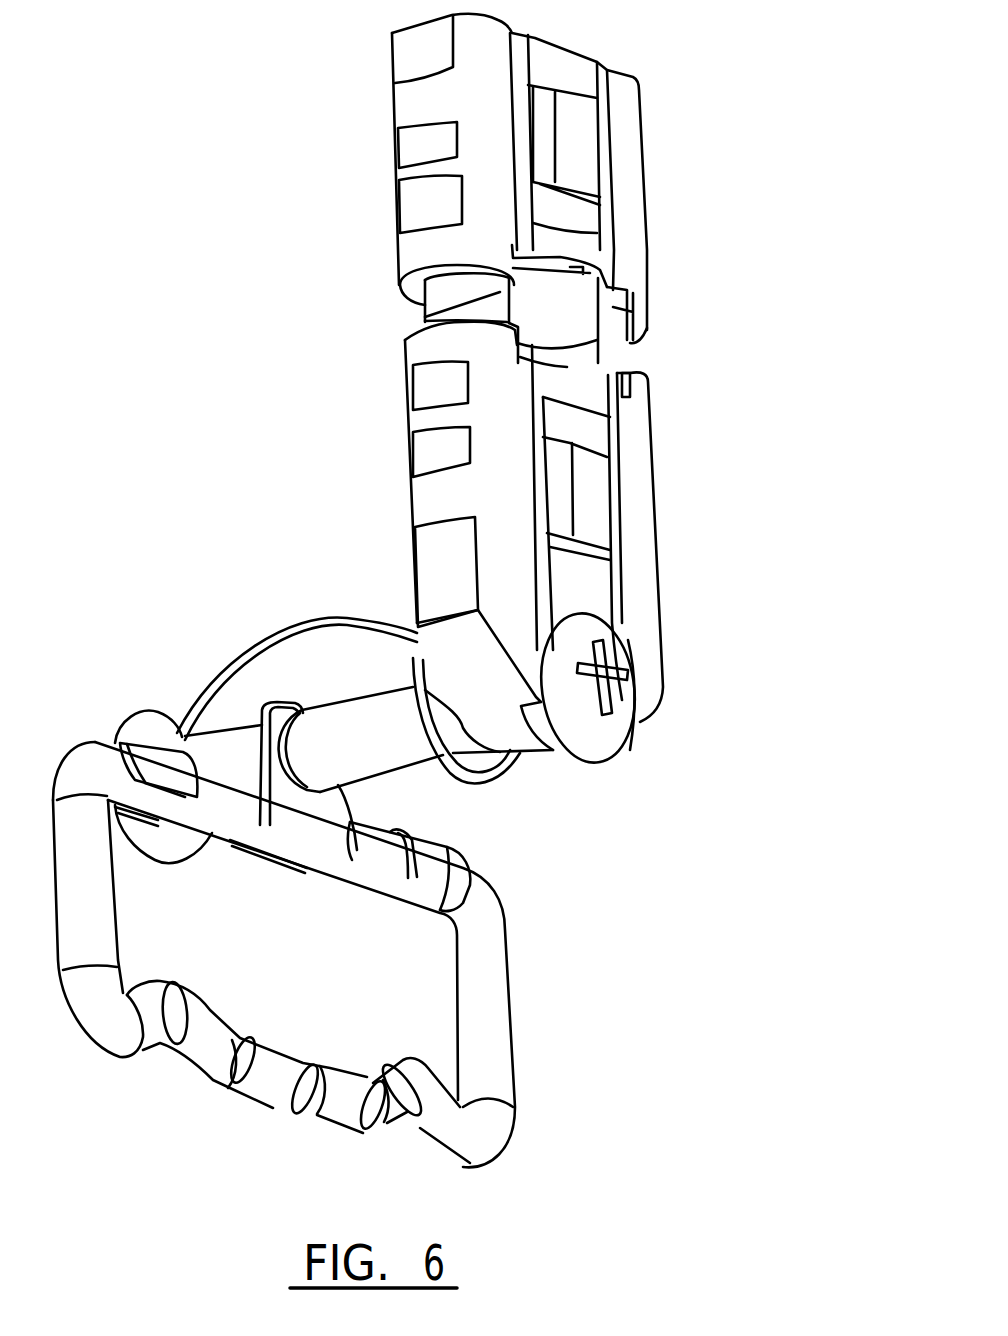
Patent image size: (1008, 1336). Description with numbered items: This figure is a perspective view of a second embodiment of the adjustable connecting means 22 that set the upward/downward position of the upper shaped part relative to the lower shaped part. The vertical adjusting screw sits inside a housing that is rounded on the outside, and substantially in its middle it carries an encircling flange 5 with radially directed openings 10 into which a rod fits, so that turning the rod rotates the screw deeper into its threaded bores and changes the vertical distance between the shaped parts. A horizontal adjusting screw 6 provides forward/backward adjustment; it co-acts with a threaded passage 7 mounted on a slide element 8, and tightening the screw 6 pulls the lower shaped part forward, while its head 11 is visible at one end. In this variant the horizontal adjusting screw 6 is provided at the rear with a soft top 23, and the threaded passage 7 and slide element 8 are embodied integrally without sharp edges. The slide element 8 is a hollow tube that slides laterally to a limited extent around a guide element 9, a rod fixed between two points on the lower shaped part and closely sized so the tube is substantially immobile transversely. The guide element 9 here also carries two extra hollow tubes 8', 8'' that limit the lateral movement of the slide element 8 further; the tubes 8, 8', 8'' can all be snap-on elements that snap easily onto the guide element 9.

The adjustable connecting means 22 is at (660, 92).
The encircling flange 5 is at (532, 320).
The radially directed openings 10 is at (623, 303).
The head 11 is at (610, 737).
The threaded passage 7 is at (257, 720).
The horizontal adjusting screw 6 is at (365, 727).
The guide element 9 is at (500, 933).
The slide element 8 is at (308, 828).
The extra hollow tube 8' is at (441, 860).
The extra hollow tube 8'' is at (150, 724).
The soft top 23 is at (173, 857).